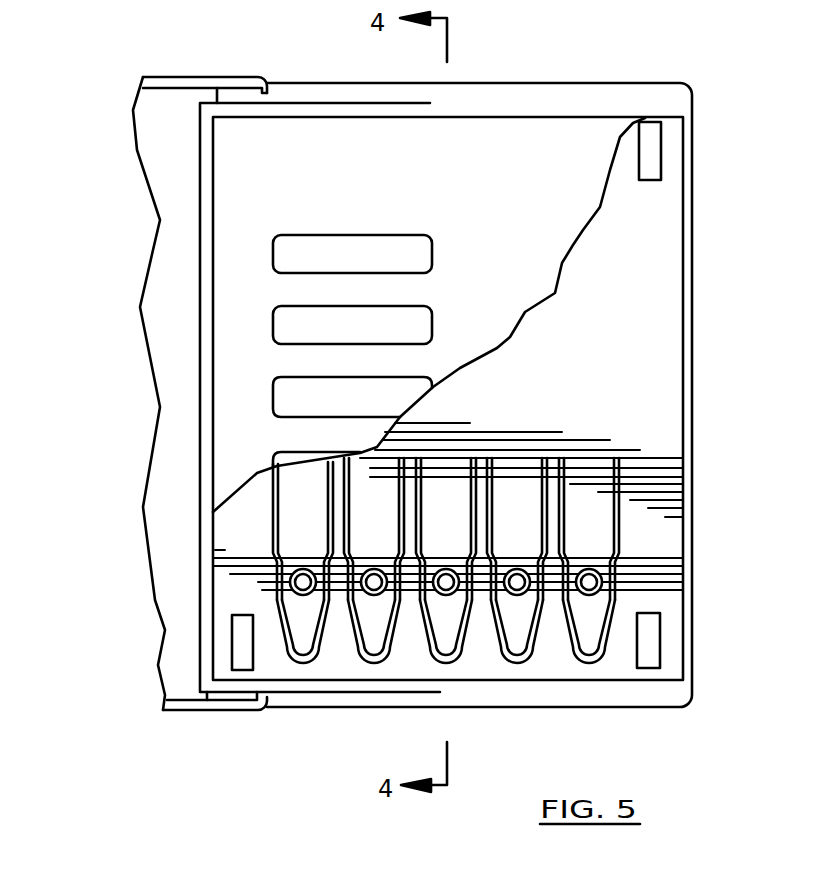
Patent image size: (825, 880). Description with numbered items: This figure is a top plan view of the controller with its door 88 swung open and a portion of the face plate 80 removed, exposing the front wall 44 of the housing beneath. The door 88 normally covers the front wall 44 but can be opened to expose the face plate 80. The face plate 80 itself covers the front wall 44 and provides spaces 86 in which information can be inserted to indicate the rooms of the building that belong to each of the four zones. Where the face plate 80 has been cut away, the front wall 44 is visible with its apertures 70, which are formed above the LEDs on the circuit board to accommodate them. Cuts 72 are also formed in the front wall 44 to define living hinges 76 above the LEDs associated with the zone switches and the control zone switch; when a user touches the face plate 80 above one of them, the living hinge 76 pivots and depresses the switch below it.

The front wall 44 is at (665, 233).
The face plate 80 is at (546, 135).
The spaces 86 is at (384, 250).
The door 88 is at (168, 497).
The cuts 72 is at (443, 483).
The apertures 70 is at (303, 582).
The living hinges 76 is at (375, 647).